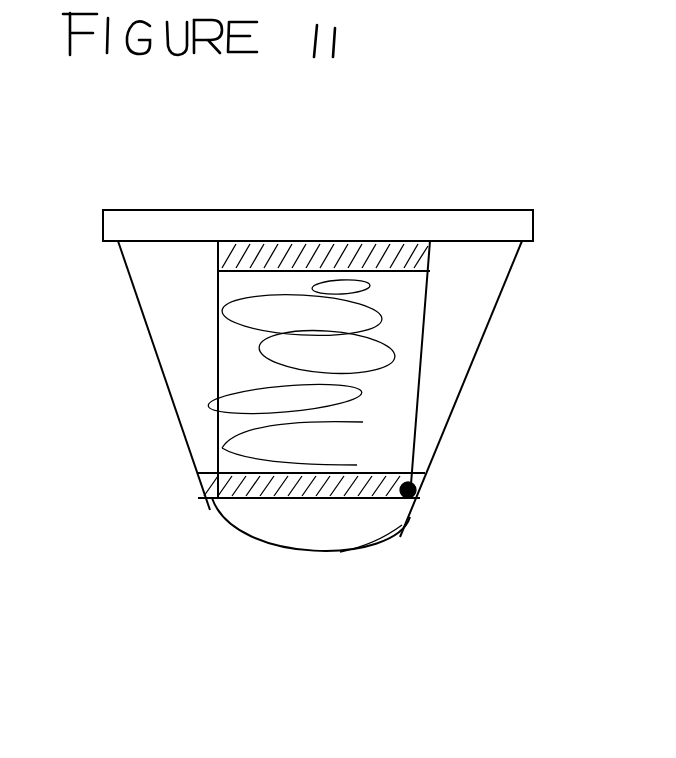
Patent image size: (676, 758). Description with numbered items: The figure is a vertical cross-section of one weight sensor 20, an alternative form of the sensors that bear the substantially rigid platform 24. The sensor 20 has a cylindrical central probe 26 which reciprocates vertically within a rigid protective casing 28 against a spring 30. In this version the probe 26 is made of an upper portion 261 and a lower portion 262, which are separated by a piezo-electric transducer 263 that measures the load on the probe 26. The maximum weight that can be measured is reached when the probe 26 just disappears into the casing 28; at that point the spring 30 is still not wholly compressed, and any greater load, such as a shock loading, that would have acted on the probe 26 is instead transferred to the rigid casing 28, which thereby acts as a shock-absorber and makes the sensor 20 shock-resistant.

The weight sensor 20 is at (507, 283).
The platform 24 is at (213, 223).
The central probe 26 is at (298, 528).
The protective casing 28 is at (183, 327).
The spring 30 is at (323, 370).
The upper portion 261 is at (460, 337).
The lower portion 262 is at (360, 538).
The piezo-electric transducer 263 is at (415, 500).